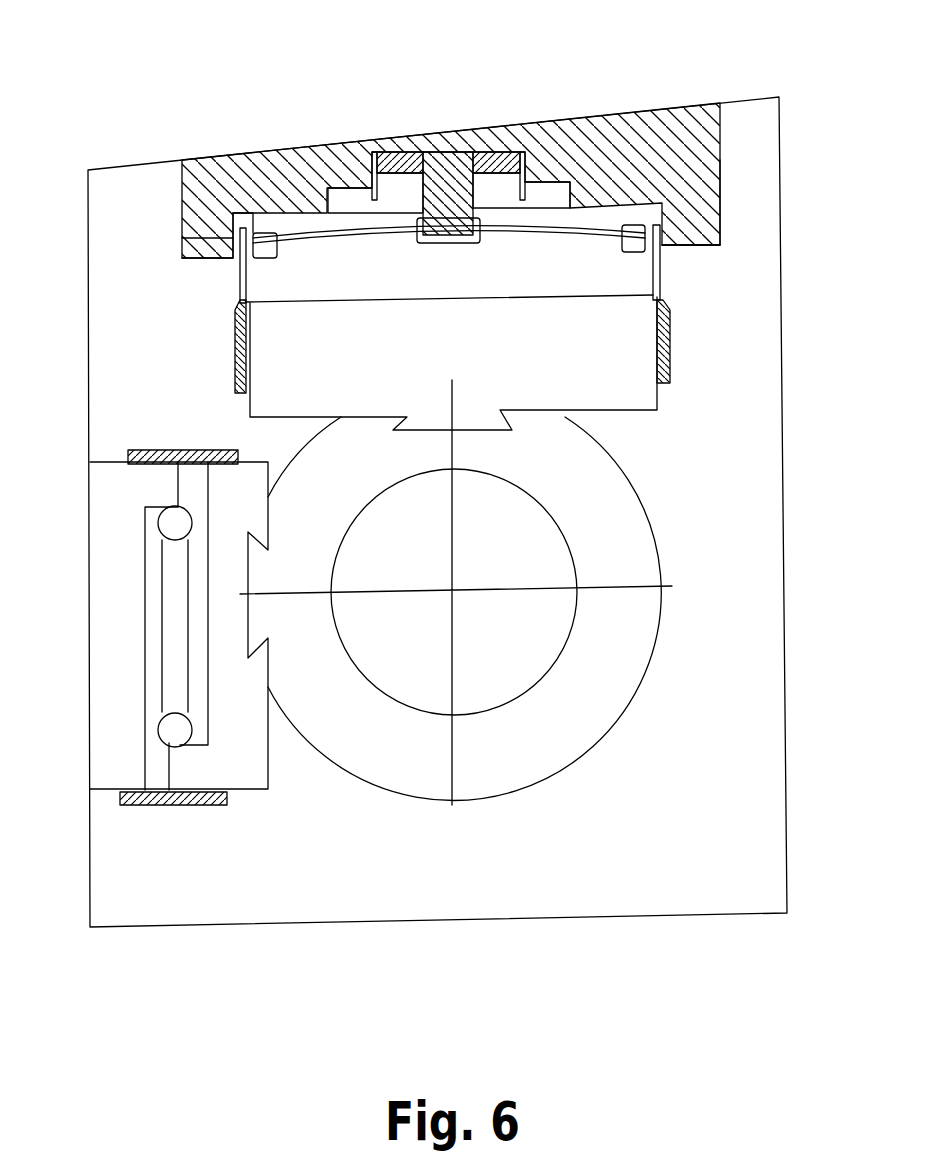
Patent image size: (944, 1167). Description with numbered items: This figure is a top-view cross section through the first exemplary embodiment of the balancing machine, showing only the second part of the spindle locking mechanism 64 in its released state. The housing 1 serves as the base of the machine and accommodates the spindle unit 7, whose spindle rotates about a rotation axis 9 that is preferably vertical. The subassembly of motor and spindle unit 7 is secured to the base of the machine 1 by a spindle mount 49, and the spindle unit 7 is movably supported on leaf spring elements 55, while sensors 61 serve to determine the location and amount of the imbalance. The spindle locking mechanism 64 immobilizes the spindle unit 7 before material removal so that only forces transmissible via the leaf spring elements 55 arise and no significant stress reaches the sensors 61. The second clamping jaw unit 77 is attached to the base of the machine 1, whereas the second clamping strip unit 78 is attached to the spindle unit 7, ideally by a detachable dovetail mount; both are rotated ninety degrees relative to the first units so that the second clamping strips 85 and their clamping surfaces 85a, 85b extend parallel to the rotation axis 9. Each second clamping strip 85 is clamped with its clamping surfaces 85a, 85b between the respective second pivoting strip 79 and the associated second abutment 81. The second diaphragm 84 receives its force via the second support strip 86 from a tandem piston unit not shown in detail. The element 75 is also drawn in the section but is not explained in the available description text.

The housing 1 is at (598, 145).
The spindle unit 7 is at (653, 547).
The rotation axis 9 is at (452, 593).
The spindle mount 49 is at (150, 812).
The leaf spring elements 55 is at (186, 450).
The sensors 61 is at (180, 623).
The spindle locking mechanism 64 is at (712, 405).
The pin 75 is at (262, 243).
The second clamping jaw unit 77 is at (703, 163).
The second clamping strip unit 78 is at (633, 358).
The second pivoting strip 79 is at (630, 233).
The second abutment 81 is at (228, 228).
The second diaphragm 84 is at (537, 230).
The second clamping strips 85 is at (240, 290).
The second clamping surface 85a is at (182, 237).
The second clamping surface 85b is at (250, 253).
The second support strip 86 is at (455, 235).